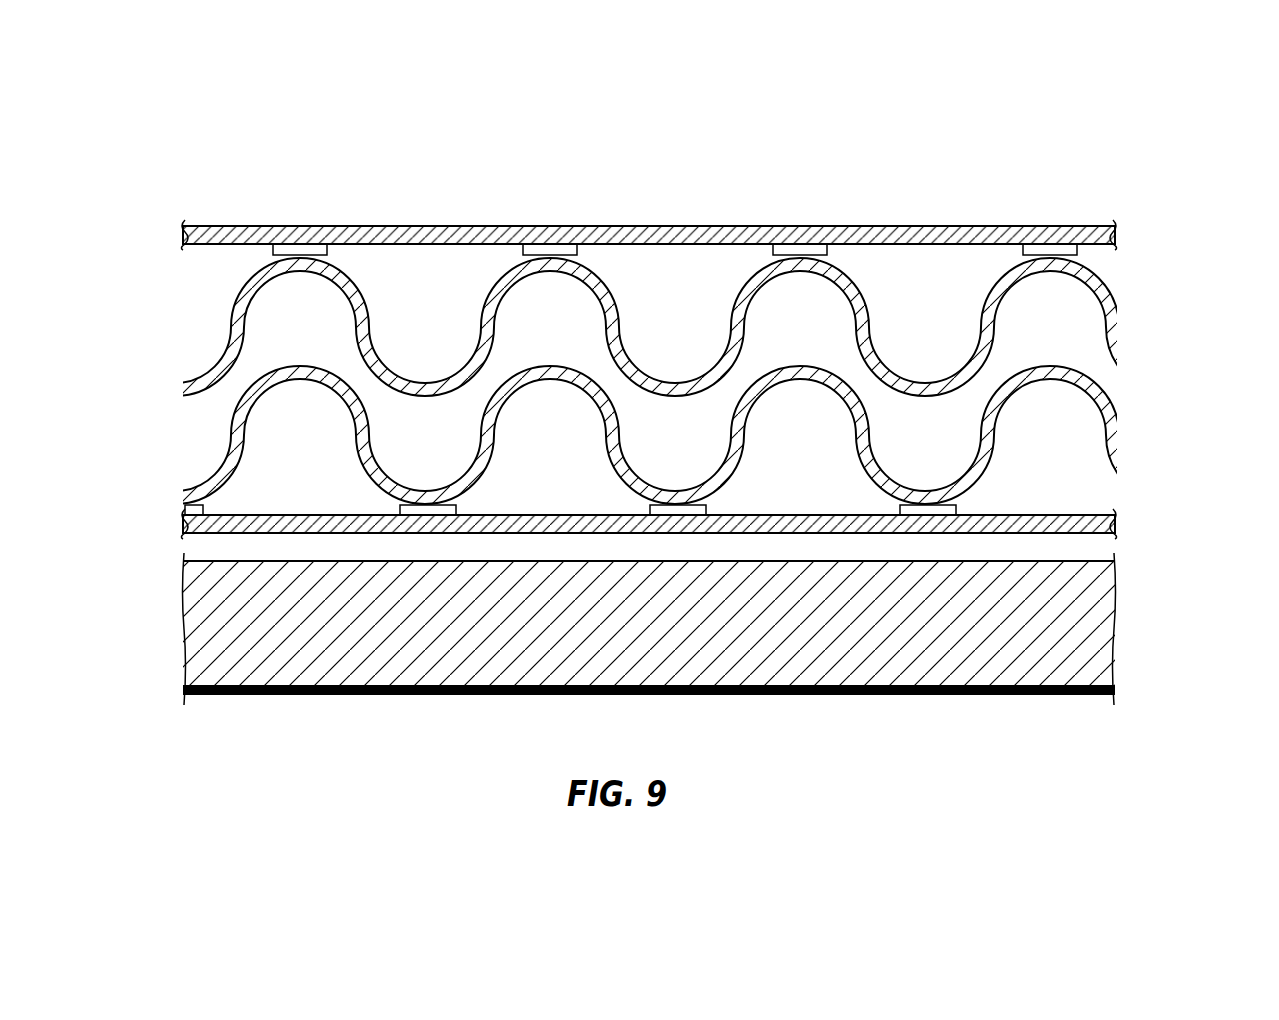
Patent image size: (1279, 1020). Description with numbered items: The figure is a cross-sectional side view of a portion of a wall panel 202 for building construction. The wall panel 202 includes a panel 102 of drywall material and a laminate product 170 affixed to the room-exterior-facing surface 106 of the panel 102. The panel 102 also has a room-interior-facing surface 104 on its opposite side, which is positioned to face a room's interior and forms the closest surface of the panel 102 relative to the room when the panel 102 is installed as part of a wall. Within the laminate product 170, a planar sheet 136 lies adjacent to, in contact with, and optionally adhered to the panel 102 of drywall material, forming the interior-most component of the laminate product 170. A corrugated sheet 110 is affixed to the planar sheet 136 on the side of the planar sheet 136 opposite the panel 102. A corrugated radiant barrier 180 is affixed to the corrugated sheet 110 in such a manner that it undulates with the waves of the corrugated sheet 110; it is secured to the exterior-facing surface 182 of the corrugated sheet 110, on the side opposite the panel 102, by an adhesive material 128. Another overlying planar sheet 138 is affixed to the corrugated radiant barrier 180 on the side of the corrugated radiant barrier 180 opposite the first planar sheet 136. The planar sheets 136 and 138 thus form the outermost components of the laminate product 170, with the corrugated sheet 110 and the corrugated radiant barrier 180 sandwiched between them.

The laminate product 170 is at (1014, 145).
The overlying planar sheet 138 is at (703, 237).
The adhesive material 128 is at (524, 250).
The corrugated sheet 110 is at (250, 282).
The corrugated radiant barrier 180 is at (250, 392).
The planar sheet 136 is at (186, 517).
The exterior-facing surface 182 is at (678, 480).
The room-exterior-facing surface 106 is at (663, 544).
The panel of drywall material 102 is at (802, 630).
The room-interior-facing surface 104 is at (992, 700).
The wall panel 202 is at (1150, 643).